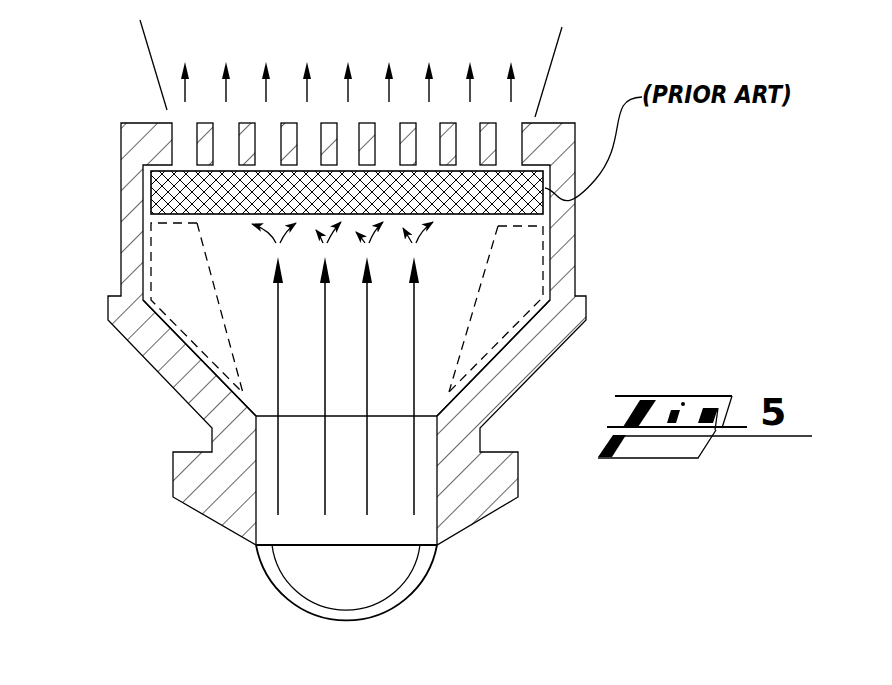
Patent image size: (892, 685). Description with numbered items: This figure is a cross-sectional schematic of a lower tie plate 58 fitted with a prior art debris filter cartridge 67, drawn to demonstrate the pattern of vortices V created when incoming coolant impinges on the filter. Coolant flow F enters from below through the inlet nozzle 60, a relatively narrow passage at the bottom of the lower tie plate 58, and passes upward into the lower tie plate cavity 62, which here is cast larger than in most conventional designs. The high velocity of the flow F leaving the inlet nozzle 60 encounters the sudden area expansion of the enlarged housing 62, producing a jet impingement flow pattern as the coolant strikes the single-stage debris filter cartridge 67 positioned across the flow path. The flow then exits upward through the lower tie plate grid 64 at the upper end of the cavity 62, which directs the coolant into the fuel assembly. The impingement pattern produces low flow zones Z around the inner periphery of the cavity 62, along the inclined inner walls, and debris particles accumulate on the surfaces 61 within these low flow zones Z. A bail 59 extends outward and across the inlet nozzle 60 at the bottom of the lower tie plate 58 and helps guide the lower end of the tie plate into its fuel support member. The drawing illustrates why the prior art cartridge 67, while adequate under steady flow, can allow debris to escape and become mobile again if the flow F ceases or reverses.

The lower tie plate 58 is at (688, 307).
The bail 59 is at (263, 607).
The inlet nozzle 60 is at (342, 557).
The surfaces 61 is at (182, 386).
The lower tie plate cavity 62 is at (318, 330).
The lower tie plate grid 64 is at (488, 127).
The prior art debris filter cartridge 67 is at (177, 190).
The coolant flow F is at (346, 66).
The low flow zones Z is at (168, 258).
The vortex region V is at (198, 312).